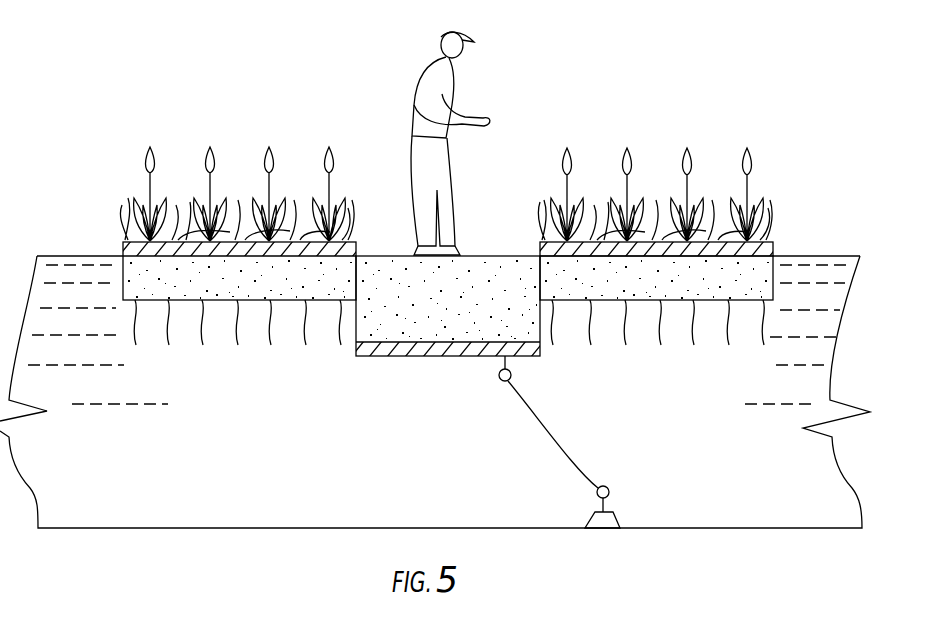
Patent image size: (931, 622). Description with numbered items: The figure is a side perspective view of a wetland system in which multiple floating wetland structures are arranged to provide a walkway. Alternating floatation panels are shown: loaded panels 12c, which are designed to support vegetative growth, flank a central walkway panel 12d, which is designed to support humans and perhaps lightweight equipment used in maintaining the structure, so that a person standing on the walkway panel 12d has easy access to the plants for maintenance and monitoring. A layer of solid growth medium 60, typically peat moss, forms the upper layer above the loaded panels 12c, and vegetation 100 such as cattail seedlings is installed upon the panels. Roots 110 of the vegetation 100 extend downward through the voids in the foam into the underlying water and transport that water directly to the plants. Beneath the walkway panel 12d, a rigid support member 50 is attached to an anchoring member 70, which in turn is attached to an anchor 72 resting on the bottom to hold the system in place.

The loaded panel 12c is at (140, 287).
The walkway panel 12d is at (389, 328).
The rigid support member 50 is at (418, 350).
The layer of solid growth medium 60 is at (765, 250).
The anchoring member 70 is at (512, 373).
The anchor 72 is at (612, 515).
The vegetation 100 is at (777, 196).
The roots 110 is at (768, 350).